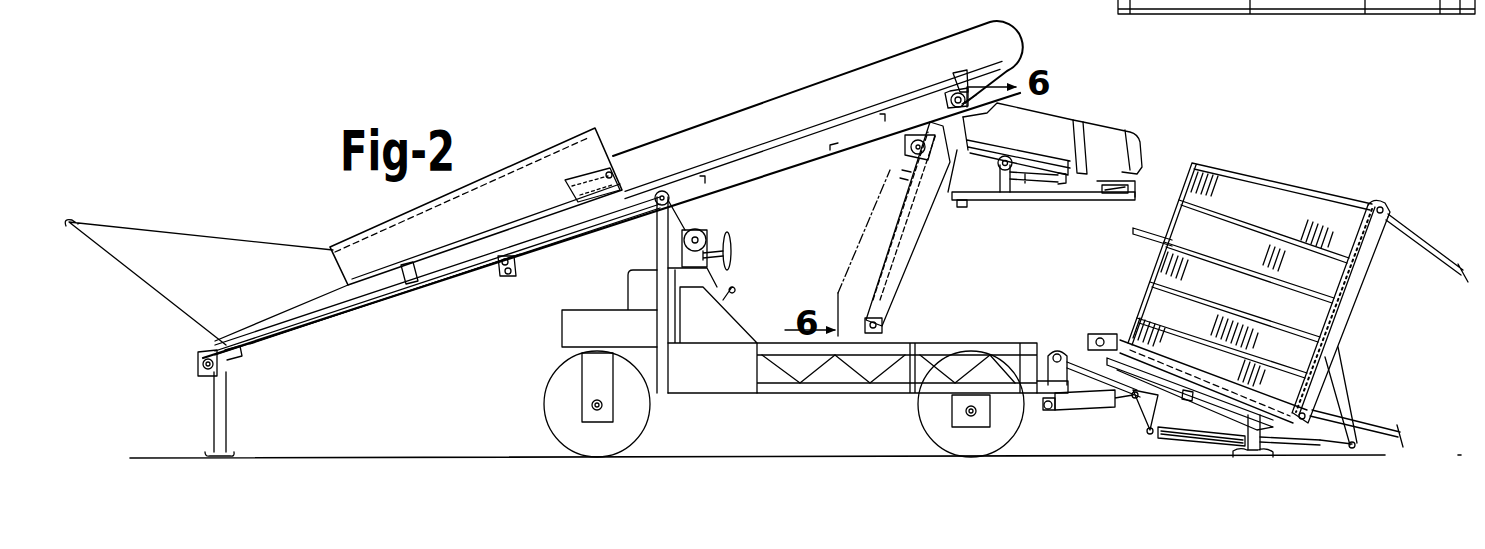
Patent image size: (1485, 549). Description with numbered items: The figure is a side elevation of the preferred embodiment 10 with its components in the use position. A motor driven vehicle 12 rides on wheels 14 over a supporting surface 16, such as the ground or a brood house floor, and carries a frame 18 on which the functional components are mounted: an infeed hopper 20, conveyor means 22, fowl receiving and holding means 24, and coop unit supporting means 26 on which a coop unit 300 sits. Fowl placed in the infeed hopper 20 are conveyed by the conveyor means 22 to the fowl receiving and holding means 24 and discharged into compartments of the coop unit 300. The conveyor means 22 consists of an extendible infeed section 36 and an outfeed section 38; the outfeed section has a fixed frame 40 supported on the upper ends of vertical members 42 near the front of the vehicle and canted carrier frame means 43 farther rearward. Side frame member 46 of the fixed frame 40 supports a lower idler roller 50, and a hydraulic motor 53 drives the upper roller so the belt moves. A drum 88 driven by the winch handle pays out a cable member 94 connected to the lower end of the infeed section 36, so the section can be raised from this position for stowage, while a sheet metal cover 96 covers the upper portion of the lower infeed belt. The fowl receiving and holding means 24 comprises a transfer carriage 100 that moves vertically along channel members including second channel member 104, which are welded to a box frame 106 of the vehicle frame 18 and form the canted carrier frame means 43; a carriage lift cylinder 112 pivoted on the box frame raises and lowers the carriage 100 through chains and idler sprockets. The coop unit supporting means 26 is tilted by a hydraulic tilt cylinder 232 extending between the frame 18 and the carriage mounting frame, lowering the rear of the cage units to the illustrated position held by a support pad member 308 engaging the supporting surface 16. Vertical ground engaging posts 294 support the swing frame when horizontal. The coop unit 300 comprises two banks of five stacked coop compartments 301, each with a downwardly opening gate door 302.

The preferred embodiment 10 is at (603, 63).
The motor driven vehicle 12 is at (765, 324).
The wheels 14 is at (560, 421).
The supporting surface 16 is at (361, 455).
The frame 18 is at (785, 392).
The infeed hopper 20 is at (128, 300).
The conveyor means 22 is at (451, 214).
The fowl receiving and holding means 24 is at (1047, 151).
The coop unit supporting means 26 is at (1200, 390).
The extendible infeed section 36 is at (429, 290).
The outfeed section 38 is at (613, 189).
The fixed frame 40 is at (793, 163).
The vertical members 42 is at (657, 246).
The canted carrier frame means 43 is at (893, 227).
The side frame member 46 is at (831, 150).
The lower idler roller 50 is at (508, 266).
The hydraulic motor 53 is at (961, 86).
The drum 88 is at (698, 234).
The cable member 94 is at (466, 268).
The sheet metal cover 96 is at (420, 212).
The transfer carriage 100 is at (1005, 202).
The second channel member 104 is at (918, 226).
The box frame 106 is at (886, 323).
The carriage lift cylinder 112 is at (867, 258).
The hydraulic tilt cylinder 232 is at (1075, 412).
The vertical ground engaging posts 294 is at (1428, 253).
The coop unit 300 is at (1273, 304).
The coop compartments 301 is at (1160, 295).
The gate door 302 is at (1138, 233).
The support pad member 308 is at (1272, 452).